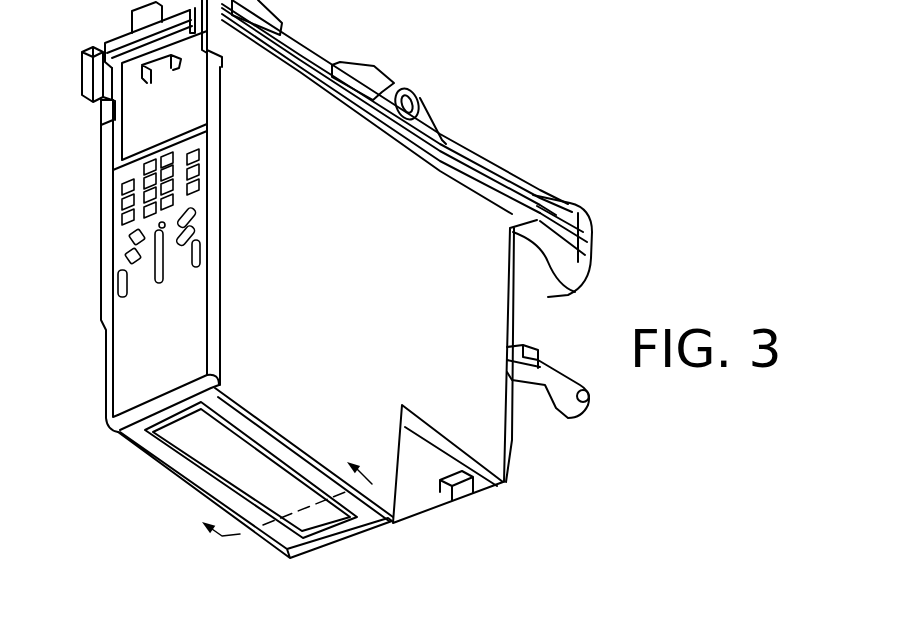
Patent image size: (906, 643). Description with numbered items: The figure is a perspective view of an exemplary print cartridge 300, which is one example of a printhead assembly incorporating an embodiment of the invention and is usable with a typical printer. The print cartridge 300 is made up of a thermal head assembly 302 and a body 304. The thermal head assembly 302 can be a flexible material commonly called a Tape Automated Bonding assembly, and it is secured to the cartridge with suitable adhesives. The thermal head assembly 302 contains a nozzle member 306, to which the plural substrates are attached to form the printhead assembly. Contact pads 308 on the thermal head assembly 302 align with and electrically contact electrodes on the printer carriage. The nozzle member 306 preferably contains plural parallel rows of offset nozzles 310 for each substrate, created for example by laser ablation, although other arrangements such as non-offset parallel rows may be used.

The print cartridge 300 is at (470, 67).
The thermal head assembly 302 is at (128, 404).
The body 304 is at (472, 217).
The nozzle member 306 is at (168, 452).
The contact pads 308 is at (108, 226).
The offset nozzles 310 is at (277, 463).